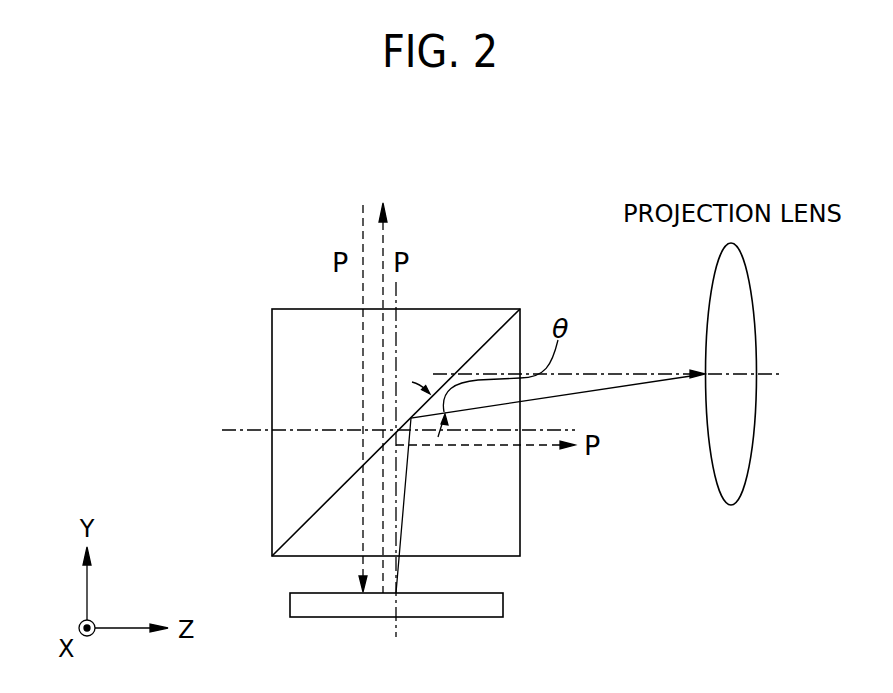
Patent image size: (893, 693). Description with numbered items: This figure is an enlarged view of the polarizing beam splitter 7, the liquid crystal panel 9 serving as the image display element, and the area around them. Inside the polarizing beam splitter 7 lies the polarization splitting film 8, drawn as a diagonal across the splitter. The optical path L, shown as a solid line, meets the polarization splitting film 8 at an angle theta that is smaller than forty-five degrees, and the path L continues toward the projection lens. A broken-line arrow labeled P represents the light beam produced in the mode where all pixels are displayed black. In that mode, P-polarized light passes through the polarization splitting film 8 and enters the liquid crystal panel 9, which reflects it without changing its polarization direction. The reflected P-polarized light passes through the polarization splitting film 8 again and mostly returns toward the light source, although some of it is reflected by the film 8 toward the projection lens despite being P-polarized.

The polarizing beam splitter 7 is at (272, 492).
The polarization splitting film 8 is at (467, 360).
The liquid crystal panel 9 is at (290, 597).
The optical path L is at (605, 385).